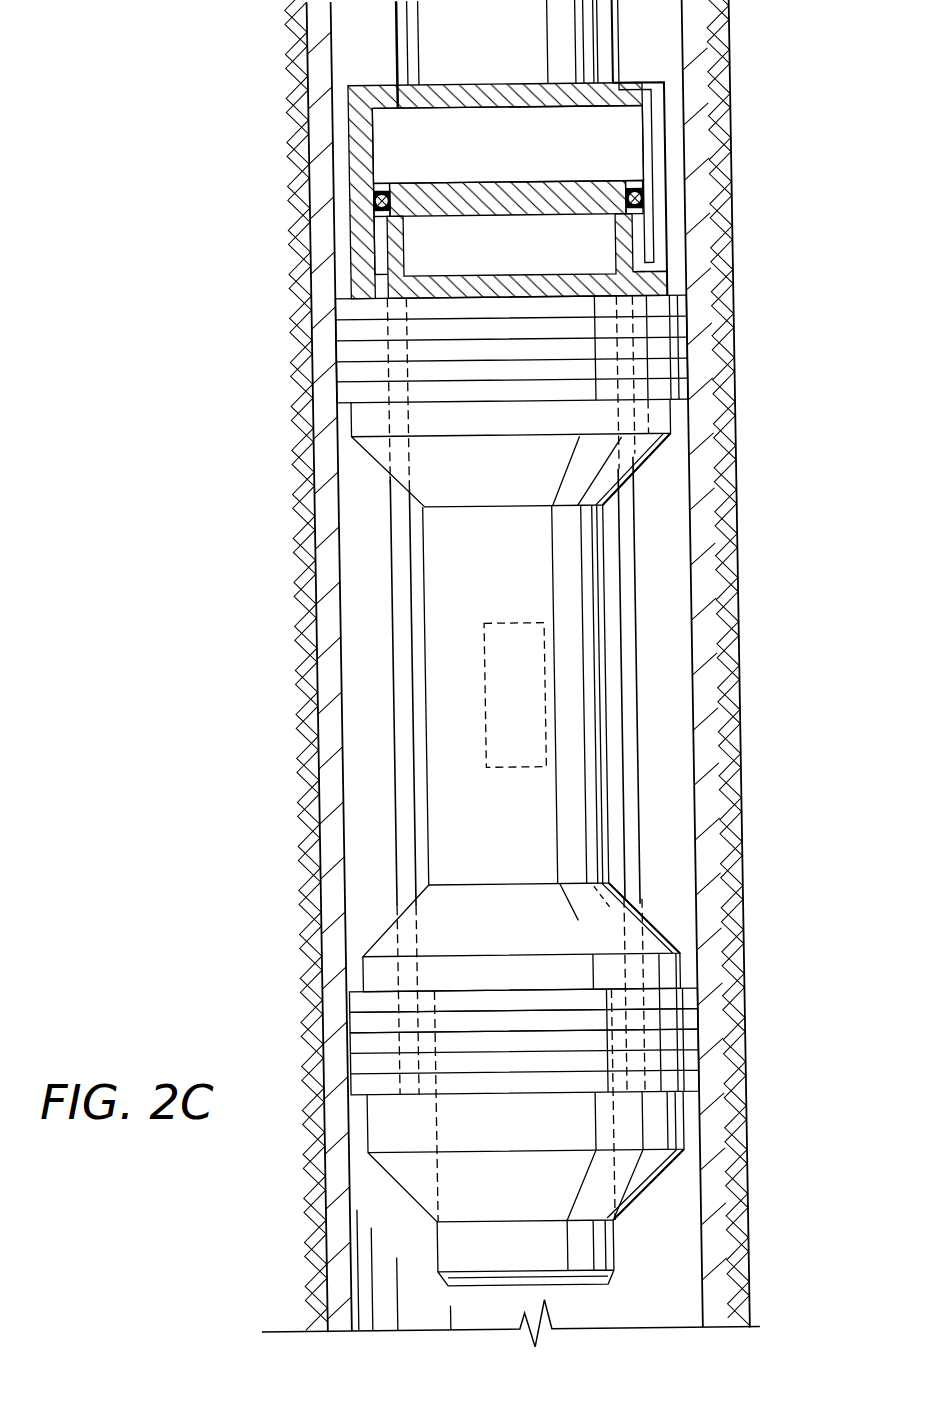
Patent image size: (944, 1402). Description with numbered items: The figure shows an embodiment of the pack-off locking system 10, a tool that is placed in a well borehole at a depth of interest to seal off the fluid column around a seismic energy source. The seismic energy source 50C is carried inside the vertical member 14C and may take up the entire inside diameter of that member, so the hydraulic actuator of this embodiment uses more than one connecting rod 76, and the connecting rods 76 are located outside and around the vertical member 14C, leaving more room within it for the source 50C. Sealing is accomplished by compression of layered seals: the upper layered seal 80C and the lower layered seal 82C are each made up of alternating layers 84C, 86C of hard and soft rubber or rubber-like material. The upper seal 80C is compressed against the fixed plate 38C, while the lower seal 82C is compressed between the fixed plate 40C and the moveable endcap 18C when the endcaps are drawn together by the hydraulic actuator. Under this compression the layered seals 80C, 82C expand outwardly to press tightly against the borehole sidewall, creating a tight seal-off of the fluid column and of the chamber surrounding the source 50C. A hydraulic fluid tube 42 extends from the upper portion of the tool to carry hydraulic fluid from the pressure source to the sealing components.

The hydraulic fluid tube 42 is at (621, 58).
The layered seal 80C is at (688, 354).
The fixed plate 38C is at (661, 422).
The seismic energy source 50C is at (513, 623).
The pack-off locking system 10 is at (652, 632).
The connecting rod 76 is at (629, 714).
The vertical member 14C is at (617, 849).
The fixed plate 40C is at (667, 972).
The layer 84C is at (356, 996).
The layer 86C is at (355, 1018).
The layered seal 82C is at (663, 1062).
The endcap 18C is at (647, 1127).